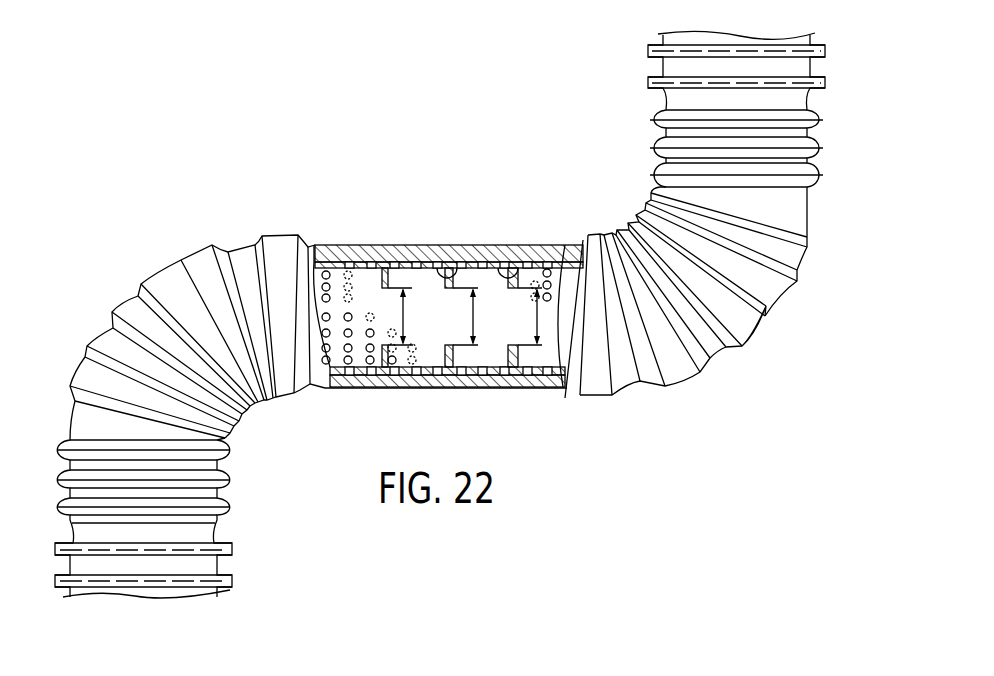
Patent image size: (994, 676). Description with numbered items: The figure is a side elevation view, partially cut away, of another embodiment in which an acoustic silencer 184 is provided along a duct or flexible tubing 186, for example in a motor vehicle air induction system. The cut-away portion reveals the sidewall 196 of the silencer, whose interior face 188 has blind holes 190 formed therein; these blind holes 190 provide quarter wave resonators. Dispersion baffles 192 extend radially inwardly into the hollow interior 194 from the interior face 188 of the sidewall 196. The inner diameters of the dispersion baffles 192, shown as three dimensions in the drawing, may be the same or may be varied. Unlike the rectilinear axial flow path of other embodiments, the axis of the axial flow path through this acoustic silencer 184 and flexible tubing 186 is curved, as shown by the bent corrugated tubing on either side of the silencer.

The acoustic silencer 184 is at (350, 238).
The flexible tubing 186 is at (196, 248).
The interior face 188 is at (447, 268).
The blind holes 190 is at (348, 317).
The dispersion baffles 192 is at (490, 262).
The hollow interior 194 is at (458, 316).
The sidewall 196 is at (406, 245).